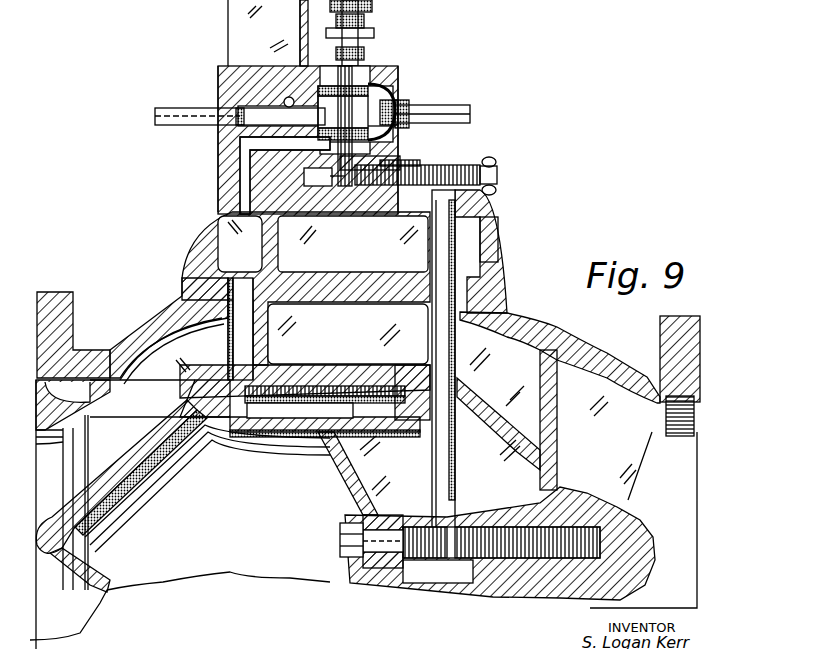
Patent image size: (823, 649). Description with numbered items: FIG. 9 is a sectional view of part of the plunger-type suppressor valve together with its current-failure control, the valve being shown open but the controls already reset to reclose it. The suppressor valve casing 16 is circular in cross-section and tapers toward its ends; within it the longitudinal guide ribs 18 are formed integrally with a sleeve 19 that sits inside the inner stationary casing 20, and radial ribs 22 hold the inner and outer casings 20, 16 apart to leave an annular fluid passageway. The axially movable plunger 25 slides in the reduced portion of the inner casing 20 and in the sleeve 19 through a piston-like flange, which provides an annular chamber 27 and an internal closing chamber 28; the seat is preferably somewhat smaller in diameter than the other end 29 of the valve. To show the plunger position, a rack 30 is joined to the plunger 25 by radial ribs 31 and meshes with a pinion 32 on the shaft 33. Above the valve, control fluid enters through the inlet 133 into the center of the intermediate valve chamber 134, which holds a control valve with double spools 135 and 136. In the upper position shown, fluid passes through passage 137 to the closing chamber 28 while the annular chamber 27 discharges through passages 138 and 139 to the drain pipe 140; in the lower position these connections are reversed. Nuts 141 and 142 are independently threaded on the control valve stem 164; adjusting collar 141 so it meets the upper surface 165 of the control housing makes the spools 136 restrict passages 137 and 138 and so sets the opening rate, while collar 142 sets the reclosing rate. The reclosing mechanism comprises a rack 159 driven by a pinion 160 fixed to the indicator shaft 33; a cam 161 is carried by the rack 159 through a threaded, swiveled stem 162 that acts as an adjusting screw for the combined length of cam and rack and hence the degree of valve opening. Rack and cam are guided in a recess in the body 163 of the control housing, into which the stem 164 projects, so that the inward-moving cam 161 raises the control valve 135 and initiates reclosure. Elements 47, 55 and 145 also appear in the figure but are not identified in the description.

The suppressor valve casing 16 is at (148, 330).
The longitudinal guide ribs 18 is at (182, 382).
The sleeve 19 is at (324, 386).
The inner stationary casing 20 is at (396, 378).
The radial ribs 22 is at (636, 454).
The plunger 25 is at (122, 492).
The annular chamber 27 is at (290, 386).
The internal closing chamber 28 is at (150, 490).
The other end of the valve 29 is at (700, 418).
The rack 30 is at (507, 527).
The radial ribs 31 is at (352, 472).
The pinion 32 is at (432, 560).
The shaft 33 is at (432, 316).
The body wall 47 is at (500, 332).
The lip 55 is at (62, 578).
The inlet 133 is at (172, 108).
The intermediate valve chamber 134 is at (362, 105).
The valve spool 135 is at (385, 90).
The valve spool 136 is at (396, 134).
The passage 137 is at (284, 100).
The passage 138 is at (240, 139).
The drain passage 139 is at (392, 104).
The drain pipe 140 is at (452, 108).
The nut 141 is at (358, 52).
The nut 142 is at (350, 34).
The lock nut 145 is at (372, 5).
The rack 159 is at (470, 168).
The pinion 160 is at (462, 164).
The cam 161 is at (318, 222).
The stem 162 is at (482, 200).
The body of the control housing 163 is at (388, 160).
The control valve stem 164 is at (324, 177).
The upper surface of the control housing 165 is at (372, 64).